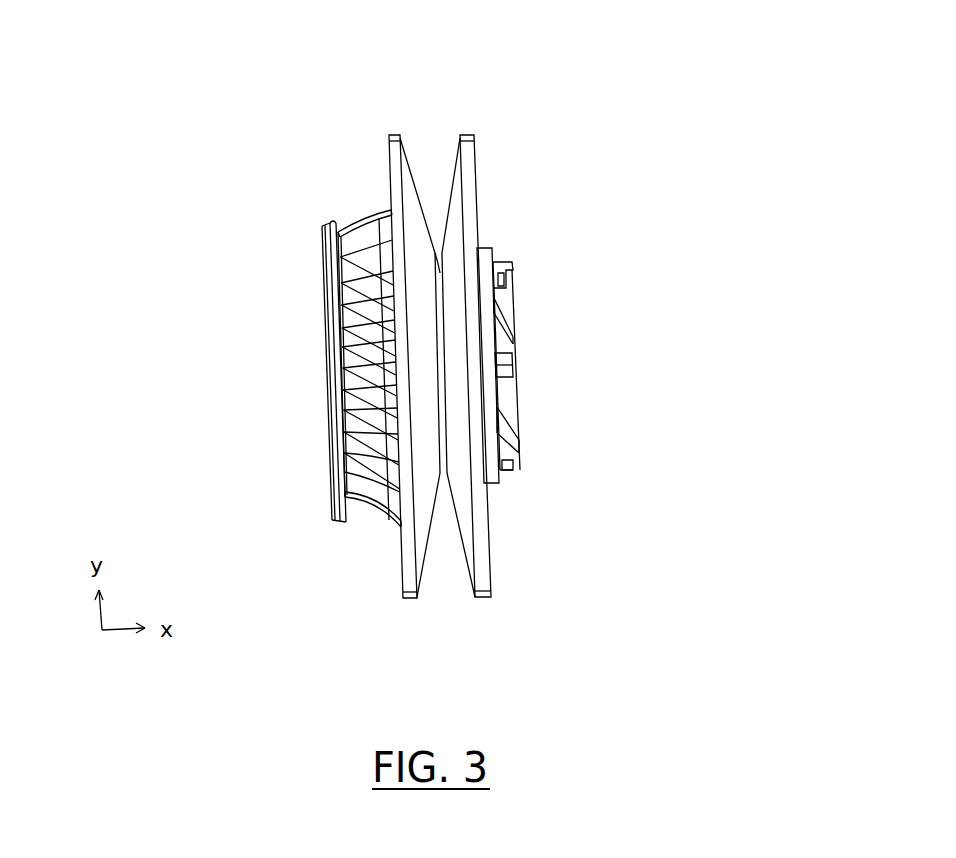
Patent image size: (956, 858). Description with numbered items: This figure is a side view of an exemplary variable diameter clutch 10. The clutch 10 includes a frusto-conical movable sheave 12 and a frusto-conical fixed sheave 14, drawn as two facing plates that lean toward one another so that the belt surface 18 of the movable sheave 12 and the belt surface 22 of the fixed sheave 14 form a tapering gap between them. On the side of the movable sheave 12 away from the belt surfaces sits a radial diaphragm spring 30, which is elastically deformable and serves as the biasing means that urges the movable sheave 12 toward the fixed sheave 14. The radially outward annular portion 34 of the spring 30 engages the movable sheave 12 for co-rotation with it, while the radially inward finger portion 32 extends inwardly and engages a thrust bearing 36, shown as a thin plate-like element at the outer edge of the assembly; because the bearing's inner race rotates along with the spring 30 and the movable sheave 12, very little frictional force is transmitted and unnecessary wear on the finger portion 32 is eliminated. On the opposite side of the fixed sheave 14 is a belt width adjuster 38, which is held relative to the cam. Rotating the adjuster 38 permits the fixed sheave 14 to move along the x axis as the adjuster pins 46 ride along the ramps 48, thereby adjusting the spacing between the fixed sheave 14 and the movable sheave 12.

The clutch 10 is at (562, 55).
The movable sheave 12 is at (393, 136).
The fixed sheave 14 is at (470, 138).
The belt surface 18 is at (413, 158).
The belt surface 22 is at (450, 155).
The radial diaphragm spring 30 is at (320, 401).
The radially inward finger portion 32 is at (353, 400).
The annular portion 34 is at (345, 458).
The thrust bearing 36 is at (330, 221).
The belt width adjuster 38 is at (510, 281).
The adjuster pins 46 is at (498, 368).
The ramps 48 is at (503, 320).